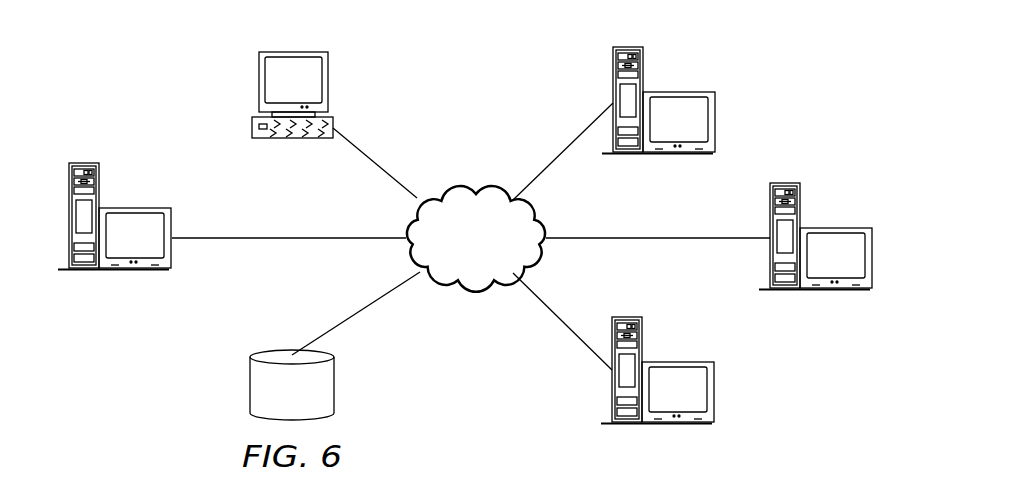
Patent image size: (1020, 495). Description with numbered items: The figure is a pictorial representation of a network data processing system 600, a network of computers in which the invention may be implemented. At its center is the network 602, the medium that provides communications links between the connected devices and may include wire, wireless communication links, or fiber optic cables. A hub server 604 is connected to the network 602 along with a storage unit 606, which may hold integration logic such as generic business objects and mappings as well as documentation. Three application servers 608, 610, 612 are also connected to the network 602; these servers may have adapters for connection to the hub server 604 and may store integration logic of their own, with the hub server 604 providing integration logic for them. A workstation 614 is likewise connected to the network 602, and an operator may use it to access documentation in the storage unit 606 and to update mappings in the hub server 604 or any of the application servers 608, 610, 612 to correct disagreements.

The network data processing system 600 is at (396, 93).
The network 602 is at (448, 190).
The hub server 604 is at (137, 208).
The storage unit 606 is at (250, 385).
The application server 608 is at (680, 92).
The application server 610 is at (838, 228).
The application server 612 is at (680, 362).
The workstation 614 is at (259, 83).